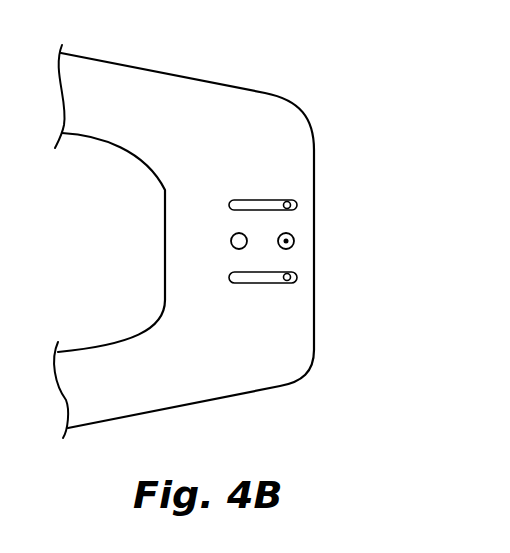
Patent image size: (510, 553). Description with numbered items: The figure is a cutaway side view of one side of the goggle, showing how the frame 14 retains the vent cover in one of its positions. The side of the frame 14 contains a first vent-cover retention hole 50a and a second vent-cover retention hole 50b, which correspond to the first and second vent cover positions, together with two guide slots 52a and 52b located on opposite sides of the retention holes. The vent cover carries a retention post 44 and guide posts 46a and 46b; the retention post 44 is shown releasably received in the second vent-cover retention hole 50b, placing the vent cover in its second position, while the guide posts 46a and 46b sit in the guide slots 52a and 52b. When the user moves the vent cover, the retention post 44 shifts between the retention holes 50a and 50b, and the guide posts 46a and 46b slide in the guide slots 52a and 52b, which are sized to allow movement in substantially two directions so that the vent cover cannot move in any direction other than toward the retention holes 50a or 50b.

The frame 14 is at (133, 63).
The retention post 44 is at (292, 246).
The guide post 46a is at (292, 201).
The guide post 46b is at (292, 283).
The first vent-cover retention hole 50a is at (230, 242).
The second vent-cover retention hole 50b is at (292, 237).
The guide slot 52a is at (257, 197).
The guide slot 52b is at (265, 286).